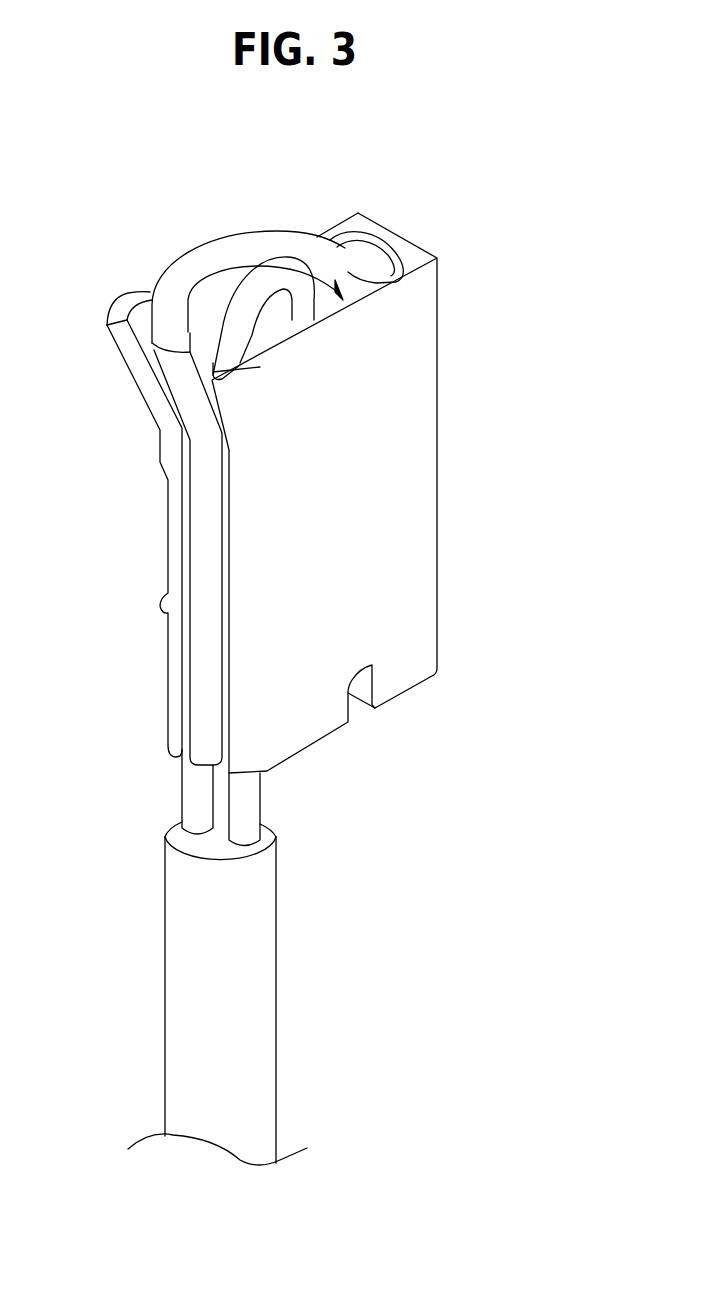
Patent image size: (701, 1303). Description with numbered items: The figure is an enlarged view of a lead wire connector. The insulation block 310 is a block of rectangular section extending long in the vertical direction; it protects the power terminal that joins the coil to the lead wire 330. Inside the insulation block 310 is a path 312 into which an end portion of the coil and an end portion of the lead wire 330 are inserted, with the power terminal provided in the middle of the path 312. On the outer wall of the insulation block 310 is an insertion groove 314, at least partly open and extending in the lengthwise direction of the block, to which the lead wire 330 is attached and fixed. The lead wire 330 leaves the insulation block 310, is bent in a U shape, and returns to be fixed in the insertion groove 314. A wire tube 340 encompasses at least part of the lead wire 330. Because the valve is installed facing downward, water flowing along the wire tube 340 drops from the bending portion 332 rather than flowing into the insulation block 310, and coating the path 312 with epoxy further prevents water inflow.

The insulation block 310 is at (437, 469).
The path 312 is at (388, 262).
The insertion groove 314 is at (207, 352).
The lead wire 330 is at (187, 791).
The bending portion 332 is at (278, 273).
The wire tube 340 is at (252, 962).